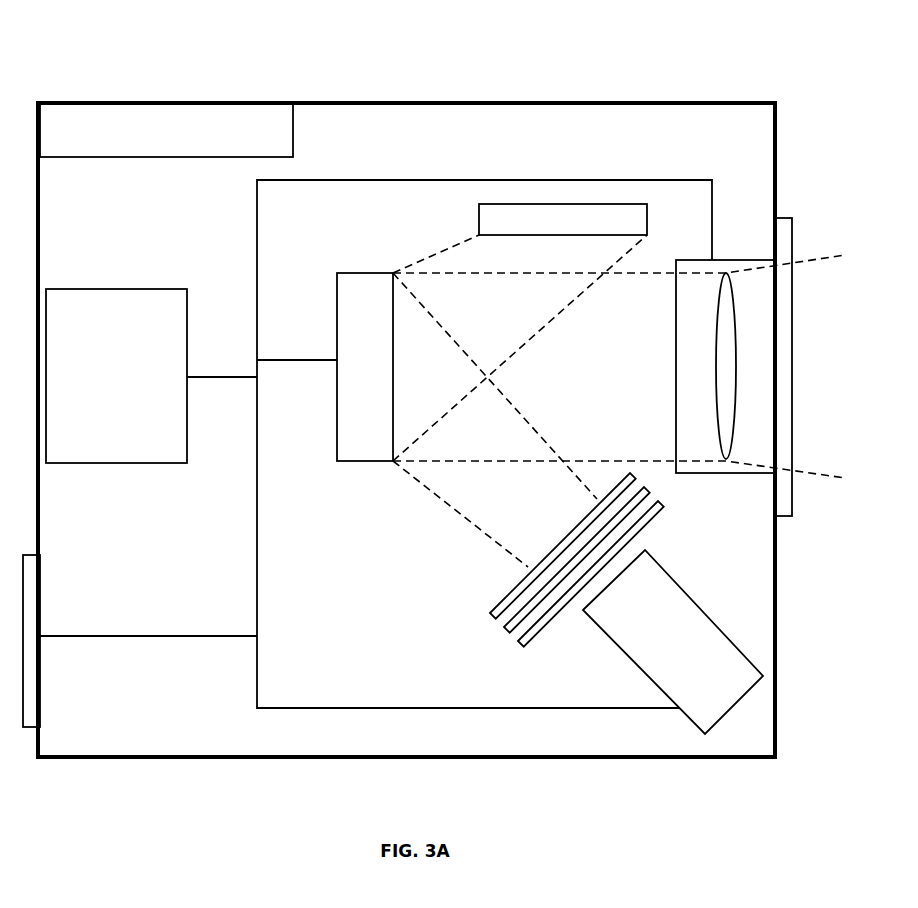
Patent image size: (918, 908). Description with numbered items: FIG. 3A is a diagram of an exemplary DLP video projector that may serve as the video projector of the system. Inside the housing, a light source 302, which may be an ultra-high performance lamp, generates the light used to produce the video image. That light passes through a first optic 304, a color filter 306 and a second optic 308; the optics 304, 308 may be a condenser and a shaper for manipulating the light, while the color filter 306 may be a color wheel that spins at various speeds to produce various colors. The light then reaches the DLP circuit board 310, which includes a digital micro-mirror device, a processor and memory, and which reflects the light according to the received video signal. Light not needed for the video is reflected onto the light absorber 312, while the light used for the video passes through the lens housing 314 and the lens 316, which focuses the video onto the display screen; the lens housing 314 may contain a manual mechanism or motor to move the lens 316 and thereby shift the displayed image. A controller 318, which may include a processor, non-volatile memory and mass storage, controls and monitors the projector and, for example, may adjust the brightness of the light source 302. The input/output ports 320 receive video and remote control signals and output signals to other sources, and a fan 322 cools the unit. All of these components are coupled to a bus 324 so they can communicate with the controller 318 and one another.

The light source 302 is at (685, 667).
The optic 304 is at (518, 641).
The color filter 306 is at (504, 627).
The optic 308 is at (490, 613).
The DLP circuit board 310 is at (355, 322).
The light absorber 312 is at (523, 220).
The lens housing 314 is at (676, 330).
The lens 316 is at (716, 390).
The controller 318 is at (116, 376).
The input/output ports 320 is at (47, 610).
The fan 322 is at (117, 100).
The bus 324 is at (226, 555).